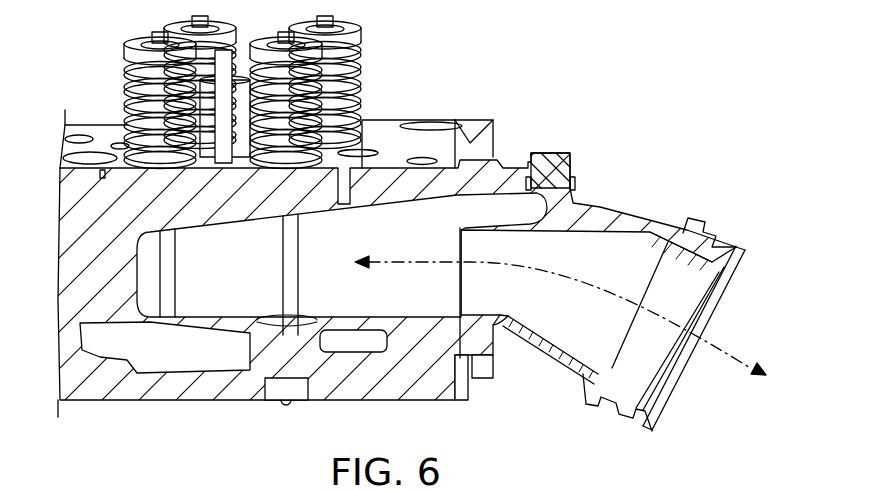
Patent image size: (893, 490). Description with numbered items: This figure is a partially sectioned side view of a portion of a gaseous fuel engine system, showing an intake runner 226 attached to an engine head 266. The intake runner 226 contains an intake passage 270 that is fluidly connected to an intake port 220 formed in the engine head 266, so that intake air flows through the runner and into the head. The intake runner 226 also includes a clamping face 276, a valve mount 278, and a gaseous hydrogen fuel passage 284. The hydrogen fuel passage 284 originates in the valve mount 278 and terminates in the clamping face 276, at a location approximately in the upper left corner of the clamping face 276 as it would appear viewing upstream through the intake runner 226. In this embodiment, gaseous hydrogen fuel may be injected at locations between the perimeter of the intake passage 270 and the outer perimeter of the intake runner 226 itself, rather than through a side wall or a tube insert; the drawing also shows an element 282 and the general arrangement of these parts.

The intake port 220 is at (323, 226).
The intake runner 226 is at (560, 278).
The engine head 266 is at (418, 388).
The intake passage 270 is at (560, 332).
The clamping face 276 is at (456, 333).
The valve mount 278 is at (572, 178).
The flange 282 is at (738, 357).
The gaseous hydrogen fuel passage 284 is at (512, 200).